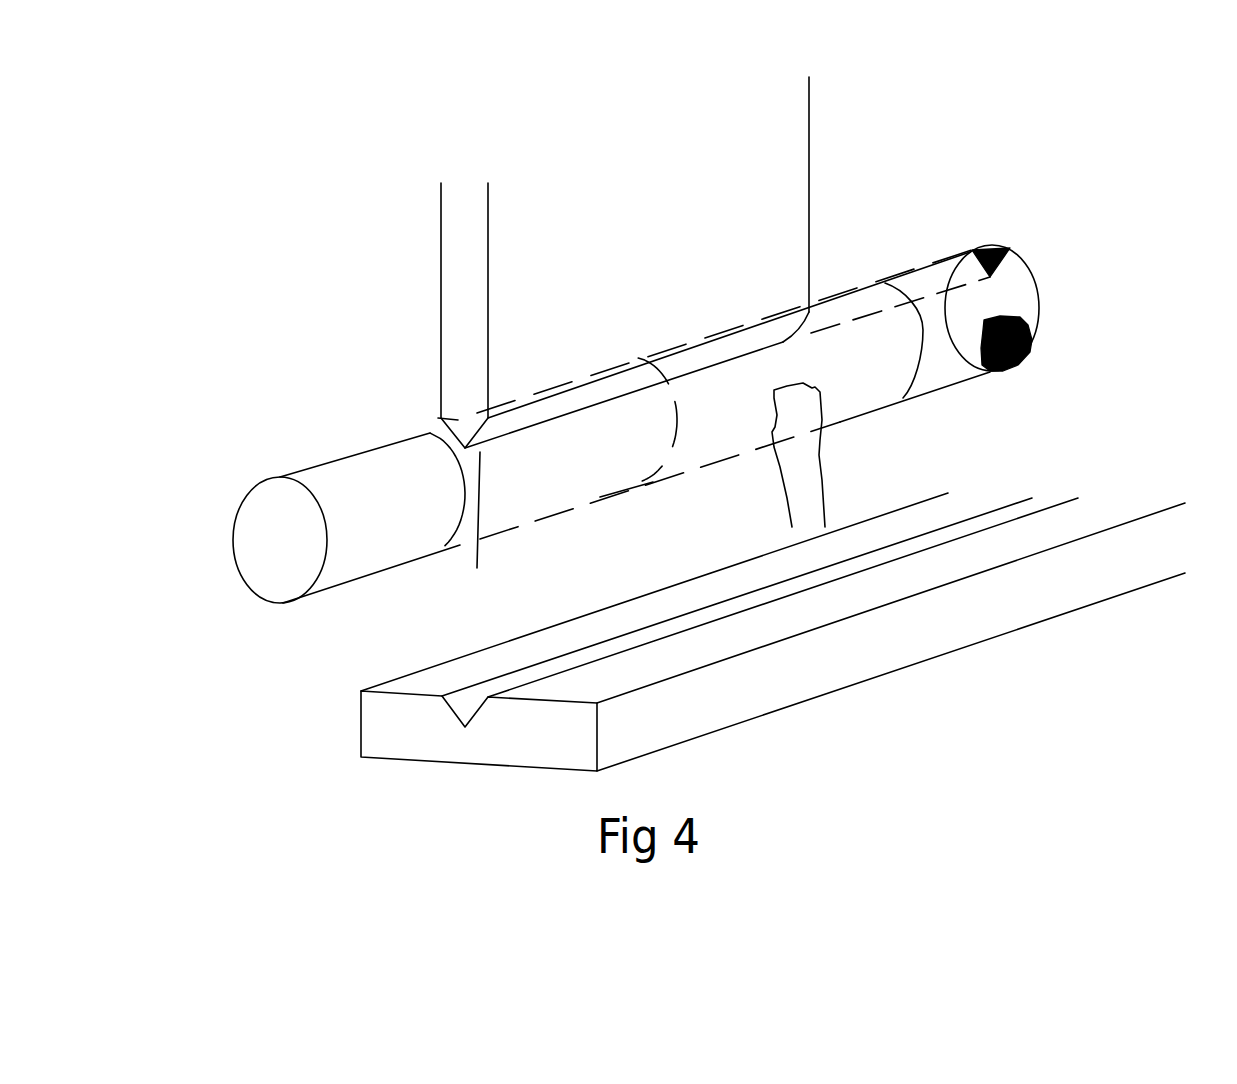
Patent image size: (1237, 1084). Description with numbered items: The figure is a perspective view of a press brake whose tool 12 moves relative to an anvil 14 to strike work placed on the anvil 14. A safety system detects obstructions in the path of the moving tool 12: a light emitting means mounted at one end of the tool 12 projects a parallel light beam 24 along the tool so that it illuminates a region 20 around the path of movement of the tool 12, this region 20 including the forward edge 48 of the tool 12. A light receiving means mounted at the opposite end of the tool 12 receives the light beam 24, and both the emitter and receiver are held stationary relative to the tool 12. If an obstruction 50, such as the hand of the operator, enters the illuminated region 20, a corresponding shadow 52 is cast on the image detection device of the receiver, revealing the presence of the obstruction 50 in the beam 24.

The tool 12 is at (458, 348).
The anvil 14 is at (388, 738).
The region 20 is at (602, 468).
The parallel light beam 24 is at (277, 575).
The forward edge 48 is at (484, 527).
The obstruction 50 is at (805, 465).
The shadow 52 is at (1030, 348).